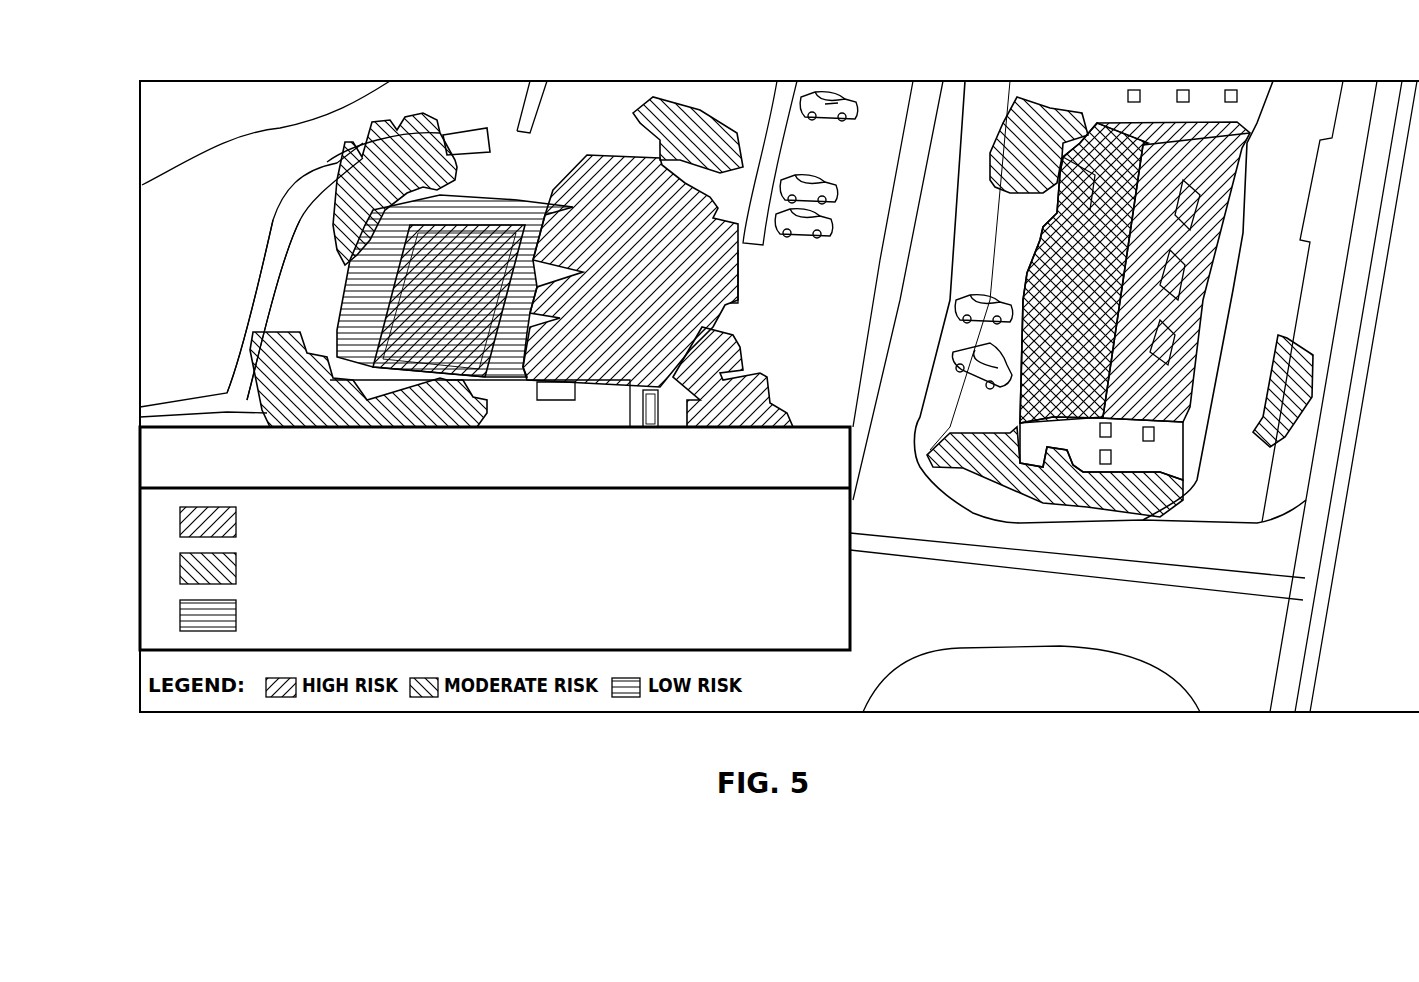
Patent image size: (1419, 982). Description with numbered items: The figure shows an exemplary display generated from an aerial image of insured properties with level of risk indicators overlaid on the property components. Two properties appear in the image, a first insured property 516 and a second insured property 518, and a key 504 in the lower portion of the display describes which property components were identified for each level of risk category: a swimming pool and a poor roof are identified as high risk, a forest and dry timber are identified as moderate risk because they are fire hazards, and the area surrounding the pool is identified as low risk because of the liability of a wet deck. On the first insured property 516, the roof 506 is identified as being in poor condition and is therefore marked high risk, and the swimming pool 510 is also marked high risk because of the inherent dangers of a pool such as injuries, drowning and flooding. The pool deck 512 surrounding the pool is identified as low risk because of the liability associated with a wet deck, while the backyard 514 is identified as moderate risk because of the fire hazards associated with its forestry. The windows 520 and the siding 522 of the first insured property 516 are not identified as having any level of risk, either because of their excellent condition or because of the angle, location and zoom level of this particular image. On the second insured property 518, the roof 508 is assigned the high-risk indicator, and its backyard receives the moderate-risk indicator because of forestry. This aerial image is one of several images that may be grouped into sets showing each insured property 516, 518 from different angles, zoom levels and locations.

The key 504 is at (128, 490).
The roof 506 is at (777, 81).
The roof 508 is at (1217, 203).
The swimming pool 510 is at (360, 248).
The pool deck 512 is at (345, 305).
The backyard 514 is at (365, 135).
The first insured property 516 is at (757, 72).
The second insured property 518 is at (1298, 72).
The windows 520 is at (660, 413).
The siding 522 is at (330, 385).